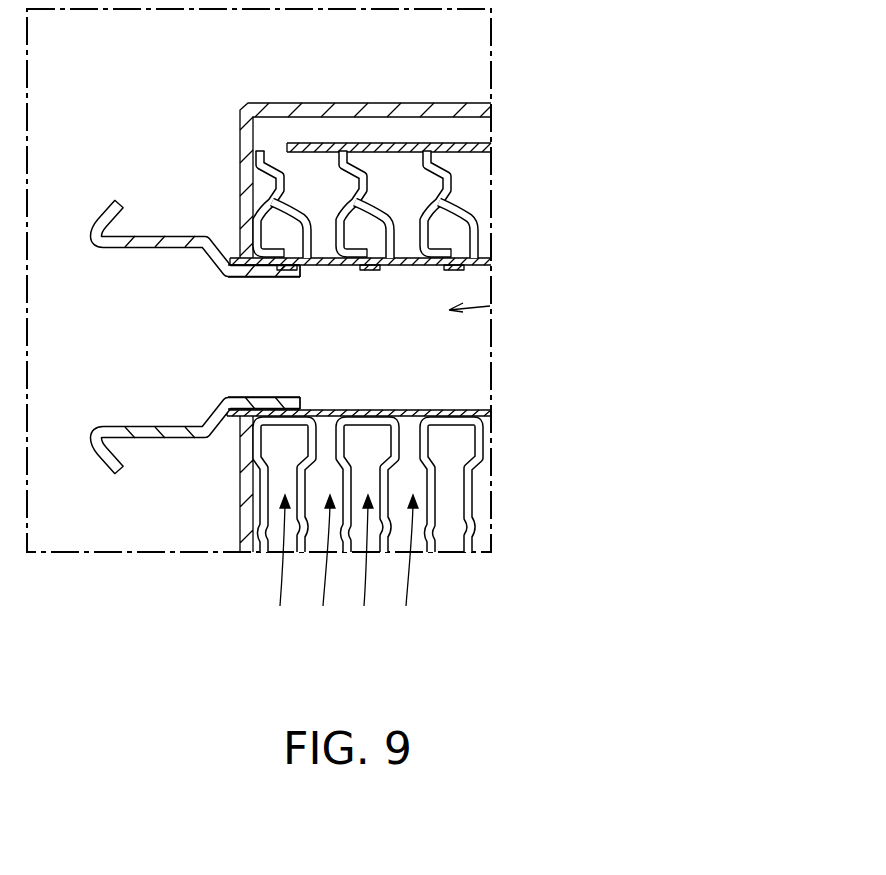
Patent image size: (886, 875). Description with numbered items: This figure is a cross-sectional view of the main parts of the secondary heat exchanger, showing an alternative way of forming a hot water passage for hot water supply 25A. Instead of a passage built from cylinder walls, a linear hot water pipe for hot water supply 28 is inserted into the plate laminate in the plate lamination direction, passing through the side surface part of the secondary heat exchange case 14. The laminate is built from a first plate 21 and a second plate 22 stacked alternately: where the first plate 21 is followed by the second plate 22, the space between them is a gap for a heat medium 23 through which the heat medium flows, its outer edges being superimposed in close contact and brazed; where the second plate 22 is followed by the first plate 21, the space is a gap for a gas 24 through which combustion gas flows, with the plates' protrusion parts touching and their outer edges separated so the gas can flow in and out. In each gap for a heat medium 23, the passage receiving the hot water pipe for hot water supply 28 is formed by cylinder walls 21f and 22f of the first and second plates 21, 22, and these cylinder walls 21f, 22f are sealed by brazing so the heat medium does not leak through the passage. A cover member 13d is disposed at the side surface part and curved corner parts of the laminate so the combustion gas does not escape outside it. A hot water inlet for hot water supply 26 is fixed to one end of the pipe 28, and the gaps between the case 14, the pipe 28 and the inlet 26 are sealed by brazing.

The cover member 13d is at (474, 151).
The secondary heat exchange case 14 is at (288, 103).
The first plate 21 is at (268, 553).
The cylinder wall of first plate 21f is at (282, 262).
The second plate 22 is at (303, 553).
The cylinder wall of second plate 22f is at (293, 258).
The gap for a heat medium 23 is at (322, 564).
The gap for a gas 24 is at (364, 564).
The hot water passage for hot water supply 25A is at (490, 306).
The hot water inlet for hot water supply 26 is at (158, 234).
The hot water pipe for hot water supply 28 is at (233, 258).